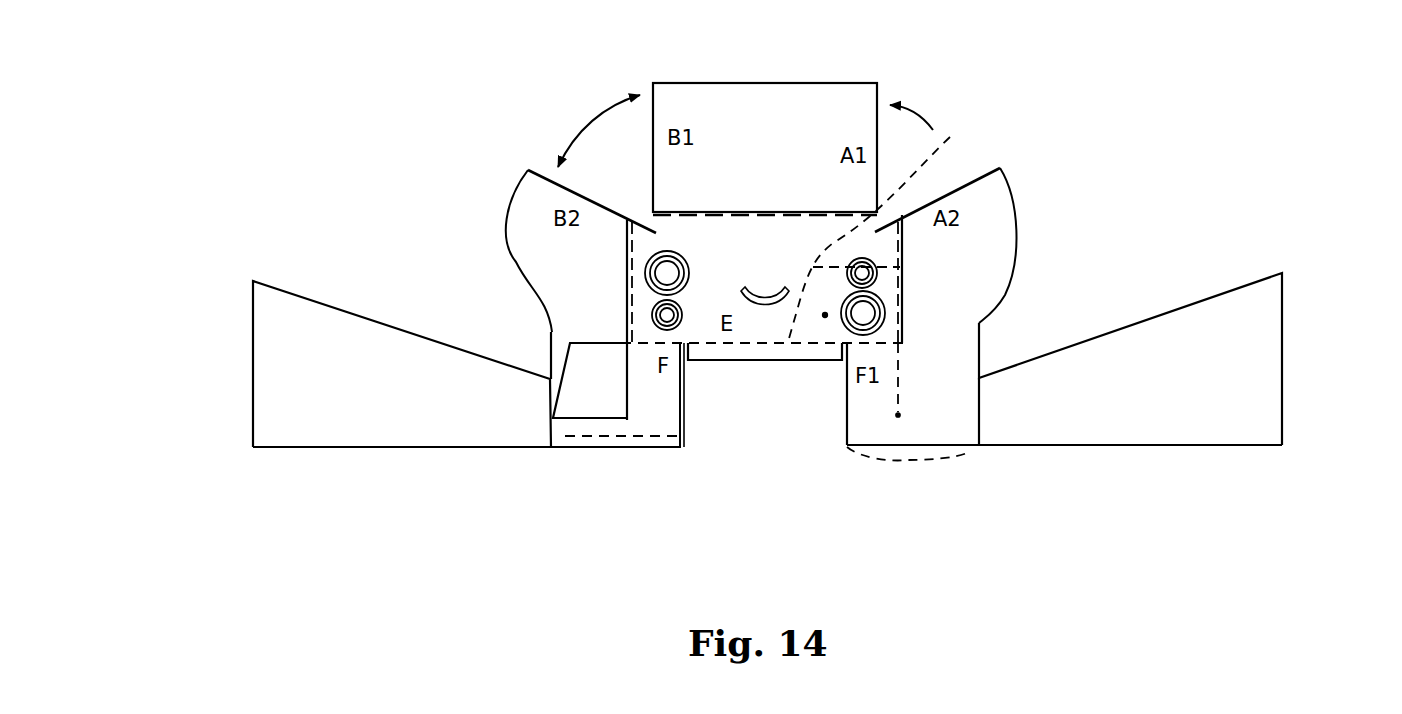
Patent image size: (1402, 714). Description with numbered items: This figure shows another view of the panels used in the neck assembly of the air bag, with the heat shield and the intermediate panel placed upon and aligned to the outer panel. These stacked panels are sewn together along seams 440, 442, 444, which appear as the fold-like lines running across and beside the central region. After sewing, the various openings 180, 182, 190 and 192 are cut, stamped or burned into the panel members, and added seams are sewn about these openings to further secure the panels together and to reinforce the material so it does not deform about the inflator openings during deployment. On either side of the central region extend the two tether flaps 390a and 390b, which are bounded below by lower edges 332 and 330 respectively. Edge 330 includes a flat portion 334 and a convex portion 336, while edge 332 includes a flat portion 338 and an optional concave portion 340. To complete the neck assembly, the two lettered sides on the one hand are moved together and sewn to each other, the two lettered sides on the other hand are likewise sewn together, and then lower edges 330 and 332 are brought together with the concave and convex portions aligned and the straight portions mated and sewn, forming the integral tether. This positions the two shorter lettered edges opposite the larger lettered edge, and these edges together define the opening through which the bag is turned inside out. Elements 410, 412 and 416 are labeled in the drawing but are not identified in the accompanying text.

The seam 442 is at (710, 213).
The side flap 416 is at (648, 225).
The seam 440 is at (626, 280).
The flap prior position 410 is at (973, 180).
The tether flap 390a is at (280, 413).
The tether flap 390b is at (1265, 373).
The inner panel 412 is at (583, 410).
The seam 444 is at (548, 413).
The concave portion 340 is at (610, 447).
The flat portion 338 is at (288, 448).
The lower edge 332 is at (326, 450).
The lower edge 330 is at (1109, 449).
The flat portion 334 is at (1213, 430).
The convex portion 336 is at (950, 457).
The opening 180 is at (677, 282).
The opening 182 is at (662, 322).
The opening 190 is at (825, 315).
The opening 192 is at (765, 307).